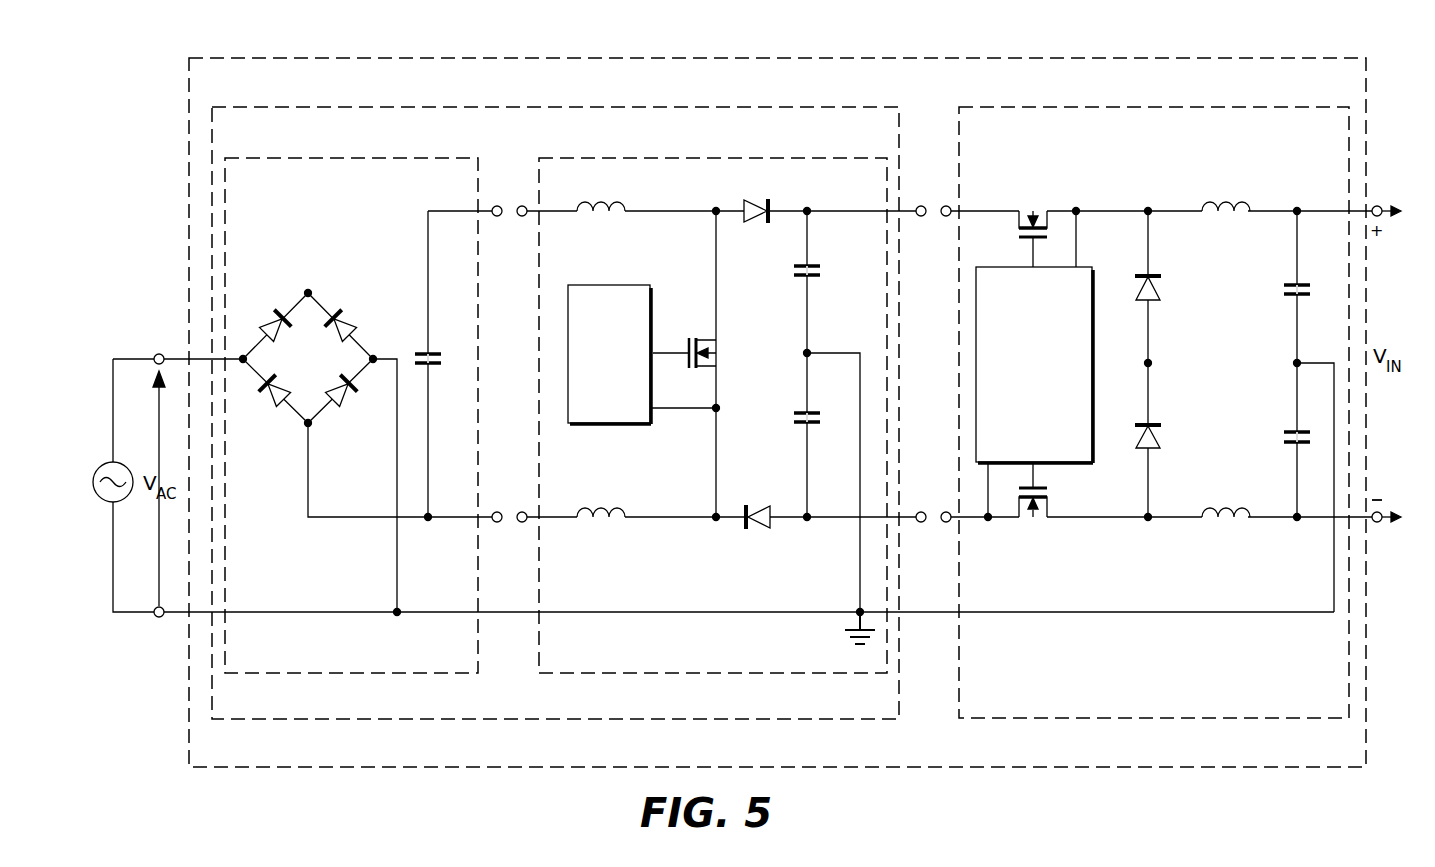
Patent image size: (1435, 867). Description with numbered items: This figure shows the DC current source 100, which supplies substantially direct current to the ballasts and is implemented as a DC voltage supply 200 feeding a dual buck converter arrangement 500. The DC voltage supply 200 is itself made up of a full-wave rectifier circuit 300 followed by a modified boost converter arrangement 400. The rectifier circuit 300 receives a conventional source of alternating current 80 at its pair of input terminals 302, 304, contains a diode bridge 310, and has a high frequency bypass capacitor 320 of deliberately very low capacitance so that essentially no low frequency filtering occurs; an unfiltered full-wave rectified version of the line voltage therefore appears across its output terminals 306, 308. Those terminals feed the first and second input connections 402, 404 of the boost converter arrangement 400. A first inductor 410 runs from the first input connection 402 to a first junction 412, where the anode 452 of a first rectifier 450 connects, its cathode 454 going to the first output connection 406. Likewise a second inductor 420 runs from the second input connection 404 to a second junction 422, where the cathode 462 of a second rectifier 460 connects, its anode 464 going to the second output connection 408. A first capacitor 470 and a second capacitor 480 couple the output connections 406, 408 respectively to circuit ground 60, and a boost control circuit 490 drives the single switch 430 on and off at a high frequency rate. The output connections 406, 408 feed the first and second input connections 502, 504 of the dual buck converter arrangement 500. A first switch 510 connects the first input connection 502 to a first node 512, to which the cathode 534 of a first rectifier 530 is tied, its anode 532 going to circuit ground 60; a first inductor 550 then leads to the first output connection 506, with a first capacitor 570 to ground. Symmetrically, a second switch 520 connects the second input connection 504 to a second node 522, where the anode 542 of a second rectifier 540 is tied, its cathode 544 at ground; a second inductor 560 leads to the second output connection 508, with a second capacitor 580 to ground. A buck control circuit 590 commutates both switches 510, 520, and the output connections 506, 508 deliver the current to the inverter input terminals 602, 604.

The DC current source 100 is at (780, 58).
The DC voltage supply 200 is at (513, 107).
The full-wave rectifier circuit 300 is at (352, 158).
The modified boost converter arrangement 400 is at (676, 158).
The dual buck converter arrangement 500 is at (1118, 107).
The source of alternating current 80 is at (120, 500).
The input terminal 302 is at (159, 352).
The input terminal 304 is at (159, 619).
The output terminal 306 is at (497, 205).
The output terminal 308 is at (497, 511).
The bridge rectifier 310 is at (321, 372).
The high frequency bypass capacitor 320 is at (422, 350).
The first input connection 402 is at (522, 217).
The second input connection 404 is at (522, 523).
The first output connection 406 is at (921, 217).
The second output connection 408 is at (921, 523).
The first inductor 410 is at (596, 200).
The first junction 412 is at (716, 207).
The second inductor 420 is at (602, 523).
The second junction 422 is at (716, 522).
The switch 430 is at (722, 353).
The first rectifier 450 is at (755, 199).
The anode 452 is at (733, 216).
The cathode 454 is at (791, 216).
The second rectifier 460 is at (757, 526).
The cathode 462 is at (739, 512).
The anode 464 is at (795, 512).
The first capacitor 470 is at (813, 278).
The second capacitor 480 is at (811, 425).
The boost control circuit 490 is at (621, 366).
The circuit ground 60 is at (853, 621).
The first input connection 502 is at (946, 205).
The second input connection 504 is at (946, 511).
The first output connection 506 is at (1377, 205).
The second output connection 508 is at (1377, 523).
The first switch 510 is at (1033, 207).
The first node 512 is at (1148, 207).
The second switch 520 is at (1033, 521).
The second node 522 is at (1150, 522).
The first rectifier 530 is at (1158, 296).
The anode 532 is at (1150, 322).
The cathode 534 is at (1150, 238).
The second rectifier 540 is at (1158, 445).
The anode 542 is at (1150, 472).
The cathode 544 is at (1150, 383).
The first inductor 550 is at (1218, 204).
The second inductor 560 is at (1218, 510).
The first capacitor 570 is at (1290, 284).
The second capacitor 580 is at (1290, 431).
The buck control circuit 590 is at (1045, 374).
The inverter input terminal 602 is at (1403, 210).
The inverter input terminal 604 is at (1403, 516).